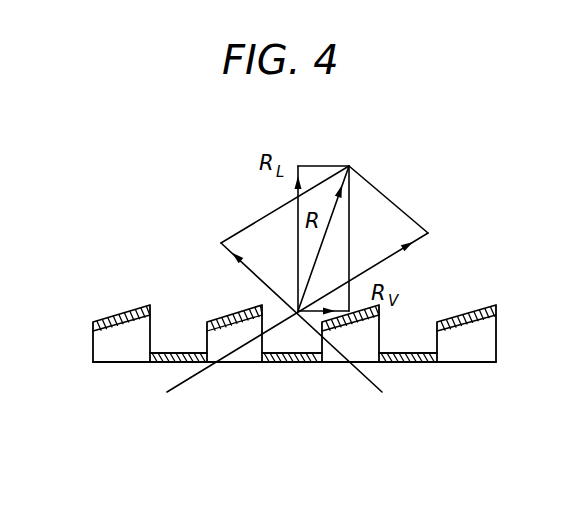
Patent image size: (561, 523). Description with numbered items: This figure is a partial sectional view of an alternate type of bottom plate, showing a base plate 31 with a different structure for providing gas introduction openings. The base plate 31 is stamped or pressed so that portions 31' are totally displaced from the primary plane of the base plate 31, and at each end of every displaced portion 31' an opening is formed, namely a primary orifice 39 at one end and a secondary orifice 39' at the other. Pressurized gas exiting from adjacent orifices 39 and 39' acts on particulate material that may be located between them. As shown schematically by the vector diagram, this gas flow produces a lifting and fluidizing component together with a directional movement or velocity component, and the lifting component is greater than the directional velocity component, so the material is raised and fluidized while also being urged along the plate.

The base plate 31 is at (294, 382).
The displaced portion of the base plate 31' is at (234, 306).
The primary orifice 39 is at (313, 321).
The secondary orifice 39' is at (283, 311).